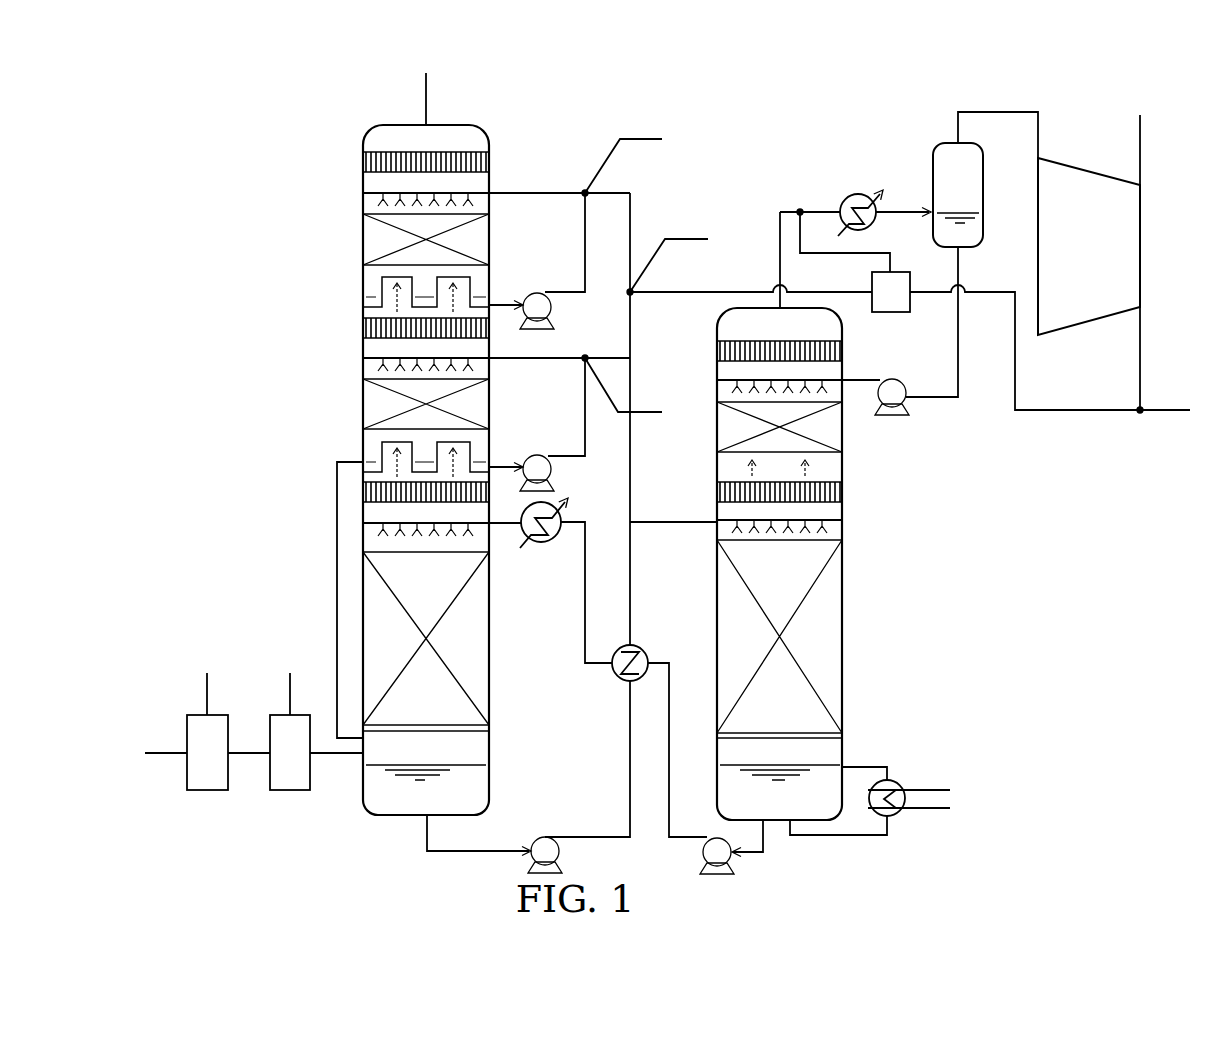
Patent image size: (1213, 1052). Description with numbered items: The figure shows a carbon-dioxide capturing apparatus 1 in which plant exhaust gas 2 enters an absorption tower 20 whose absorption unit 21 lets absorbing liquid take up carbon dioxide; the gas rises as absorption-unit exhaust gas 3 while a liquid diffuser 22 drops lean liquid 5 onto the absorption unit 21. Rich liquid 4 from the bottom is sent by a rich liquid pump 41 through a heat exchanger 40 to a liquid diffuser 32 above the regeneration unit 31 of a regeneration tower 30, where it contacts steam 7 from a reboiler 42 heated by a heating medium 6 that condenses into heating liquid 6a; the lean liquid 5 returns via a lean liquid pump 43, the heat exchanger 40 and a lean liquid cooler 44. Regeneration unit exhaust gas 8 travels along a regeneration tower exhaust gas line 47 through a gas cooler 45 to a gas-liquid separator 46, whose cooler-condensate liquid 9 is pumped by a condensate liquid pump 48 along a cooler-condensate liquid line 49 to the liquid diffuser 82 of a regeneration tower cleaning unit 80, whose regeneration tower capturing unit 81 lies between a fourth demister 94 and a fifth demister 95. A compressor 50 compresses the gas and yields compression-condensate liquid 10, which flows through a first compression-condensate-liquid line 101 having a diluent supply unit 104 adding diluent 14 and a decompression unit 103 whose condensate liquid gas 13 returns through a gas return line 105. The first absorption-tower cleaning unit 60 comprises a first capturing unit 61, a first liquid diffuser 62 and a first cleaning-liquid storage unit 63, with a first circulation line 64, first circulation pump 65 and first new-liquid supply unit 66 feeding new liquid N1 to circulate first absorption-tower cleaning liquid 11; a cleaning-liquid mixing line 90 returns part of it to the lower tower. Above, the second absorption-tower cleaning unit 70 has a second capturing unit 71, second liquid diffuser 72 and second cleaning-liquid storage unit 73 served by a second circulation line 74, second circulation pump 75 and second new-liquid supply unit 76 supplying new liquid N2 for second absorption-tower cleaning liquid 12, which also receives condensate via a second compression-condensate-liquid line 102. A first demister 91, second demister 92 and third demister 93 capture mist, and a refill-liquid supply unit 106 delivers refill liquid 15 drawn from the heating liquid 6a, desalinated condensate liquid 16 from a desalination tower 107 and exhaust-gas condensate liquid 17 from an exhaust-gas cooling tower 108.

The carbon-dioxide capturing apparatus 1 is at (315, 98).
The plant exhaust gas 2 is at (173, 765).
The absorption-unit exhaust gas 3 is at (415, 94).
The rich liquid 4 is at (660, 500).
The lean liquid 5 is at (574, 574).
The heating medium 6 is at (927, 780).
The heating liquid 6a is at (925, 818).
The steam 7 is at (880, 757).
The regeneration unit exhaust gas 8 is at (772, 244).
The cooler-condensate liquid 9 is at (855, 373).
The compression-condensate liquid 10 is at (623, 209).
The first absorption-tower cleaning liquid 11 is at (522, 350).
The second absorption-tower cleaning liquid 12 is at (522, 185).
The condensate liquid gas 13 is at (877, 247).
The diluent 14 is at (1154, 422).
The refill liquid 15 is at (697, 230).
The desalinated condensate liquid 16 is at (200, 687).
The exhaust-gas condensate liquid 17 is at (290, 687).
The absorption tower 20 is at (495, 692).
The absorption unit 21 is at (463, 642).
The liquid diffuser 22 is at (372, 523).
The regeneration tower 30 is at (848, 598).
The regeneration unit 31 is at (840, 646).
The liquid diffuser 32 is at (838, 520).
The heat exchanger 40 is at (618, 682).
The rich liquid pump 41 is at (540, 836).
The reboiler 42 is at (893, 778).
The lean liquid pump 43 is at (702, 853).
The lean liquid cooler 44 is at (540, 545).
The gas cooler 45 is at (848, 195).
The gas-liquid separator 46 is at (985, 172).
The regeneration tower exhaust gas line 47 is at (790, 208).
The condensate liquid pump 48 is at (908, 404).
The cooler-condensate liquid line 49 is at (940, 392).
The compressor 50 is at (1065, 160).
The first absorption-tower cleaning unit 60 is at (296, 377).
The first capturing unit 61 is at (382, 401).
The first liquid diffuser 62 is at (382, 358).
The first cleaning-liquid storage unit 63 is at (382, 456).
The first circulation line 64 is at (590, 418).
The first circulation pump 65 is at (535, 454).
The first new-liquid supply unit 66 is at (640, 414).
The second absorption-tower cleaning unit 70 is at (296, 208).
The second capturing unit 71 is at (382, 238).
The second liquid diffuser 72 is at (392, 193).
The second cleaning-liquid storage unit 73 is at (382, 292).
The second circulation line 74 is at (615, 297).
The second circulation pump 75 is at (535, 292).
The second new-liquid supply unit 76 is at (650, 142).
The regeneration tower cleaning unit 80 is at (850, 430).
The regeneration tower capturing unit 81 is at (737, 426).
The liquid diffuser 82 is at (732, 380).
The cleaning-liquid mixing line 90 is at (335, 606).
The first demister 91 is at (367, 492).
The second demister 92 is at (372, 328).
The third demister 93 is at (372, 164).
The fourth demister 94 is at (845, 491).
The fifth demister 95 is at (722, 348).
The first compression-condensate-liquid line 101 is at (645, 298).
The second compression-condensate-liquid line 102 is at (633, 228).
The decompression unit 103 is at (912, 303).
The diluent supply unit 104 is at (1163, 406).
The gas return line 105 is at (858, 256).
The refill-liquid supply unit 106 is at (705, 237).
The desalination tower 107 is at (207, 792).
The exhaust-gas cooling tower 108 is at (290, 792).
The new liquid N1 is at (630, 407).
The new liquid N2 is at (630, 132).